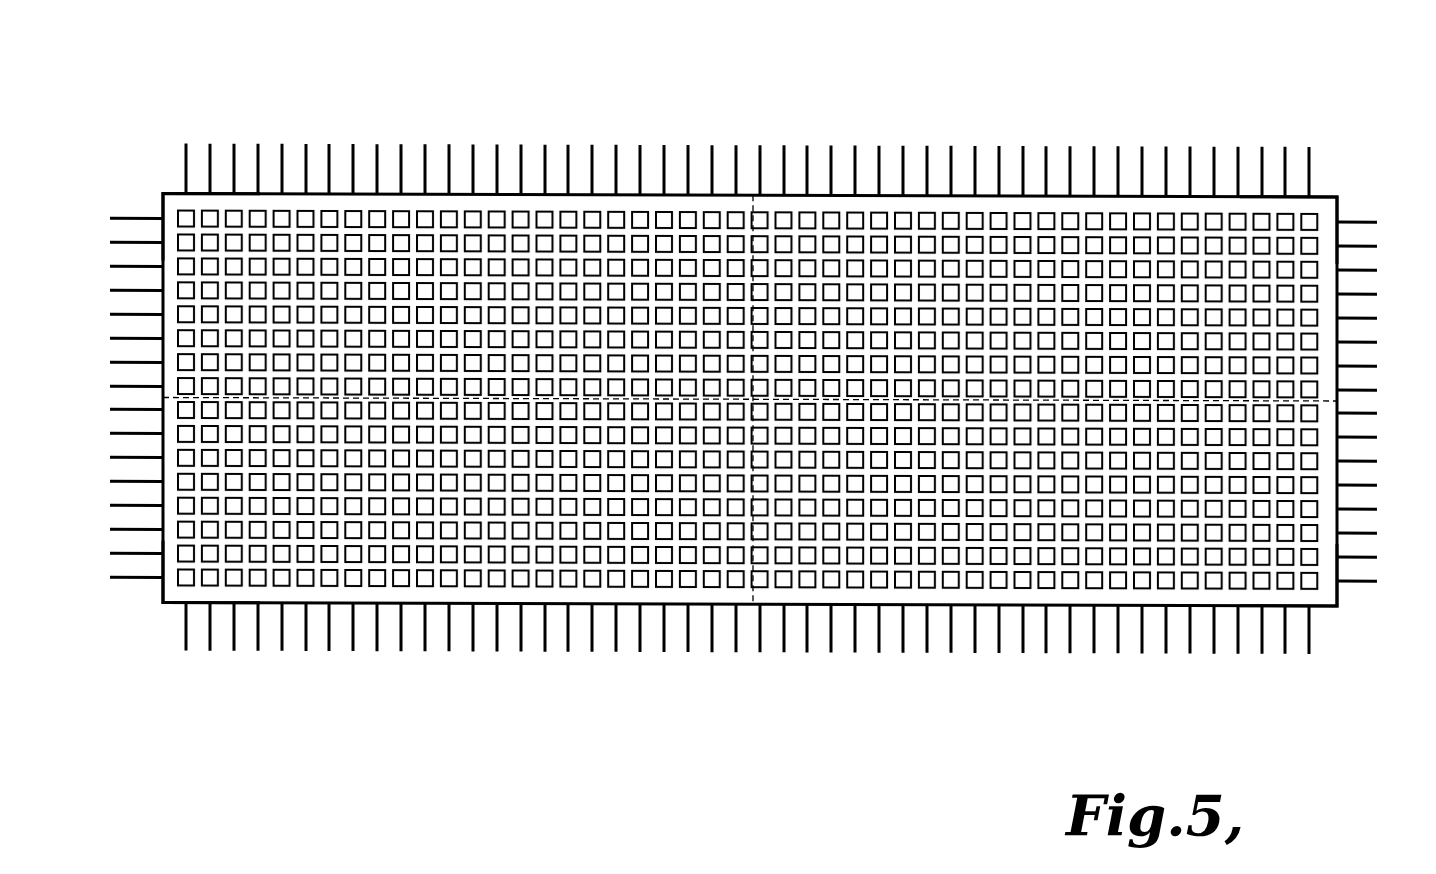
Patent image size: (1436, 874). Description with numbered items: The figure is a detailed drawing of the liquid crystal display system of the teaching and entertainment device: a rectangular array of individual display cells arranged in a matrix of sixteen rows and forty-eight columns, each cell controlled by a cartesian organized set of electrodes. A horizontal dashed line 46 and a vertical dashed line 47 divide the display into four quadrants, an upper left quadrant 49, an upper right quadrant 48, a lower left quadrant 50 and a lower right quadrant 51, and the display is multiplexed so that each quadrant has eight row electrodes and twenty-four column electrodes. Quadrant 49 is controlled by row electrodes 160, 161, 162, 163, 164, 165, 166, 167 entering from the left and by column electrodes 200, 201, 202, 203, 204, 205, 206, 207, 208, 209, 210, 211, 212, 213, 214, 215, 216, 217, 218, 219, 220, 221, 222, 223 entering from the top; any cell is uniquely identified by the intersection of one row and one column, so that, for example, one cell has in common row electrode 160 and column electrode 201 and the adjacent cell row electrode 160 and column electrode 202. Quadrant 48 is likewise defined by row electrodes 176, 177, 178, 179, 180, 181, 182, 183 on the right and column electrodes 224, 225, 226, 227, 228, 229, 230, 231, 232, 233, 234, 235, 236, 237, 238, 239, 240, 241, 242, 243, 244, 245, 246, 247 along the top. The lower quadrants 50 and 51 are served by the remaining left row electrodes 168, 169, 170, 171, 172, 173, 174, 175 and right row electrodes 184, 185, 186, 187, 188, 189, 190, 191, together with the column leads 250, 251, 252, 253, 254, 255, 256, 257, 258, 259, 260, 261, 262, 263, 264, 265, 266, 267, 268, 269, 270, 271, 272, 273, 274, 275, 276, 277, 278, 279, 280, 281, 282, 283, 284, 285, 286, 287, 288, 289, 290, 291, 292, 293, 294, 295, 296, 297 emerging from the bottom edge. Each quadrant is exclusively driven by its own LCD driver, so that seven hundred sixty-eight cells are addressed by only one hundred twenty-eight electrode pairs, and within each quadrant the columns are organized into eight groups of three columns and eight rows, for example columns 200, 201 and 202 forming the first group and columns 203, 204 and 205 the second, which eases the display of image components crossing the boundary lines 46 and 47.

The dashed line 46 is at (166, 392).
The dashed line 47 is at (753, 193).
The quadrant 48 is at (1337, 194).
The quadrant 49 is at (163, 192).
The quadrant 50 is at (160, 602).
The quadrant 51 is at (1337, 602).
The row electrode 160 is at (110, 218).
The row electrode 161 is at (110, 242).
The row electrode 162 is at (110, 266).
The row electrode 163 is at (110, 290).
The row electrode 164 is at (110, 314).
The row electrode 165 is at (110, 338).
The row electrode 166 is at (110, 362).
The row electrode 167 is at (110, 386).
The row electrode 168 is at (110, 409).
The row electrode 169 is at (110, 433).
The row electrode 170 is at (110, 457).
The row electrode 171 is at (110, 481).
The row electrode 172 is at (110, 505).
The row electrode 173 is at (110, 529).
The row electrode 174 is at (110, 553).
The row electrode 175 is at (110, 577).
The row electrode 176 is at (1378, 219).
The row electrode 177 is at (1378, 243).
The row electrode 178 is at (1378, 267).
The row electrode 179 is at (1378, 291).
The row electrode 180 is at (1378, 315).
The row electrode 181 is at (1378, 339).
The row electrode 182 is at (1378, 363).
The row electrode 183 is at (1378, 387).
The row electrode 184 is at (1378, 410).
The row electrode 185 is at (1378, 434).
The row electrode 186 is at (1378, 458).
The row electrode 187 is at (1378, 482).
The row electrode 188 is at (1378, 506).
The row electrode 189 is at (1378, 530).
The row electrode 190 is at (1378, 554).
The row electrode 191 is at (1378, 578).
The column electrode 200 is at (186, 143).
The column electrode 201 is at (210, 143).
The column electrode 202 is at (234, 143).
The column electrode 203 is at (258, 143).
The column electrode 204 is at (282, 143).
The column electrode 205 is at (306, 143).
The column electrode 206 is at (329, 143).
The column electrode 207 is at (353, 143).
The column electrode 208 is at (377, 143).
The column electrode 209 is at (401, 143).
The column electrode 210 is at (425, 143).
The column electrode 211 is at (449, 143).
The column electrode 212 is at (473, 143).
The column electrode 213 is at (497, 143).
The column electrode 214 is at (521, 143).
The column electrode 215 is at (545, 143).
The column electrode 216 is at (568, 143).
The column electrode 217 is at (592, 143).
The column electrode 218 is at (616, 143).
The column electrode 219 is at (640, 143).
The column electrode 220 is at (664, 143).
The column electrode 221 is at (688, 143).
The column electrode 222 is at (712, 143).
The column electrode 223 is at (736, 143).
The column electrode 224 is at (760, 143).
The column electrode 225 is at (784, 143).
The column electrode 226 is at (807, 143).
The column electrode 227 is at (831, 143).
The column electrode 228 is at (855, 143).
The column electrode 229 is at (879, 143).
The column electrode 230 is at (903, 143).
The column electrode 231 is at (927, 143).
The column electrode 232 is at (951, 143).
The column electrode 233 is at (975, 143).
The column electrode 234 is at (999, 143).
The column electrode 235 is at (1023, 143).
The column electrode 236 is at (1046, 143).
The column electrode 237 is at (1070, 143).
The column electrode 238 is at (1094, 143).
The column electrode 239 is at (1118, 143).
The column electrode 240 is at (1142, 143).
The column electrode 241 is at (1166, 143).
The column electrode 242 is at (1190, 143).
The column electrode 243 is at (1214, 143).
The column electrode 244 is at (1238, 143).
The column electrode 245 is at (1262, 143).
The column electrode 246 is at (1285, 143).
The column electrode 247 is at (1309, 143).
The column terminal 250 is at (186, 650).
The column terminal 251 is at (210, 650).
The column terminal 252 is at (234, 650).
The column terminal 253 is at (258, 650).
The column terminal 254 is at (282, 650).
The column terminal 255 is at (306, 650).
The column terminal 256 is at (329, 650).
The column terminal 257 is at (353, 650).
The column terminal 258 is at (377, 650).
The column terminal 259 is at (401, 650).
The column terminal 260 is at (425, 650).
The column terminal 261 is at (449, 650).
The column terminal 262 is at (473, 650).
The column terminal 263 is at (497, 650).
The column terminal 264 is at (521, 650).
The column terminal 265 is at (545, 650).
The column terminal 266 is at (568, 650).
The column terminal 267 is at (592, 650).
The column terminal 268 is at (616, 650).
The column terminal 269 is at (640, 650).
The column terminal 270 is at (664, 650).
The column terminal 271 is at (688, 650).
The column terminal 272 is at (712, 650).
The column terminal 273 is at (736, 650).
The column terminal 274 is at (760, 650).
The column terminal 275 is at (784, 650).
The column terminal 276 is at (807, 650).
The column terminal 277 is at (831, 650).
The column terminal 278 is at (855, 650).
The column terminal 279 is at (879, 650).
The column terminal 280 is at (903, 650).
The column terminal 281 is at (927, 650).
The column terminal 282 is at (951, 650).
The column terminal 283 is at (975, 650).
The column terminal 284 is at (999, 650).
The column terminal 285 is at (1023, 650).
The column terminal 286 is at (1046, 650).
The column terminal 287 is at (1070, 650).
The column terminal 288 is at (1094, 650).
The column terminal 289 is at (1118, 650).
The column terminal 290 is at (1142, 650).
The column terminal 291 is at (1166, 650).
The column terminal 292 is at (1190, 650).
The column terminal 293 is at (1214, 650).
The column terminal 294 is at (1238, 650).
The column terminal 295 is at (1262, 650).
The column terminal 296 is at (1285, 650).
The column terminal 297 is at (1309, 650).